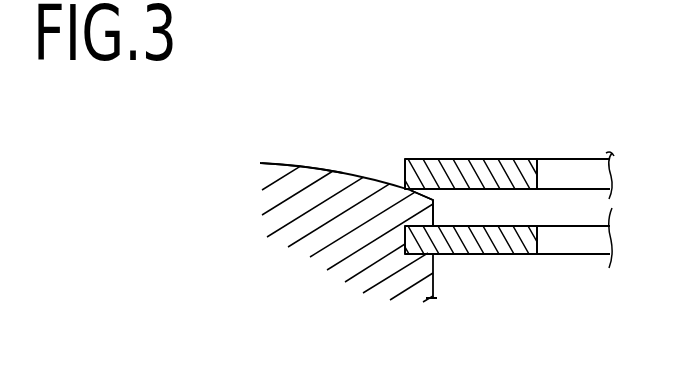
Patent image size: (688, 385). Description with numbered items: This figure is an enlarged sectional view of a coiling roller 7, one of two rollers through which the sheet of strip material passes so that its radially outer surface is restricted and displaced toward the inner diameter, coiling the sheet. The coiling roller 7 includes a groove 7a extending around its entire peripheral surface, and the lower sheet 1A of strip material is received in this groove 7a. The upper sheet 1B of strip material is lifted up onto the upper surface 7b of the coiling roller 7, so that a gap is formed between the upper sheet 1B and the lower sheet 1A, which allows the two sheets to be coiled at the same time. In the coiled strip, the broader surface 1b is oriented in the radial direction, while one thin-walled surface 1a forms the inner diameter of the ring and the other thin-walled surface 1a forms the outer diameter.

The coiling roller 7 is at (288, 247).
The groove 7a is at (419, 255).
The upper surface 7b is at (342, 175).
The lower sheet 1A is at (582, 256).
The upper sheet 1B is at (561, 157).
The thin-walled surface 1a is at (546, 159).
The broader surface 1b is at (473, 159).